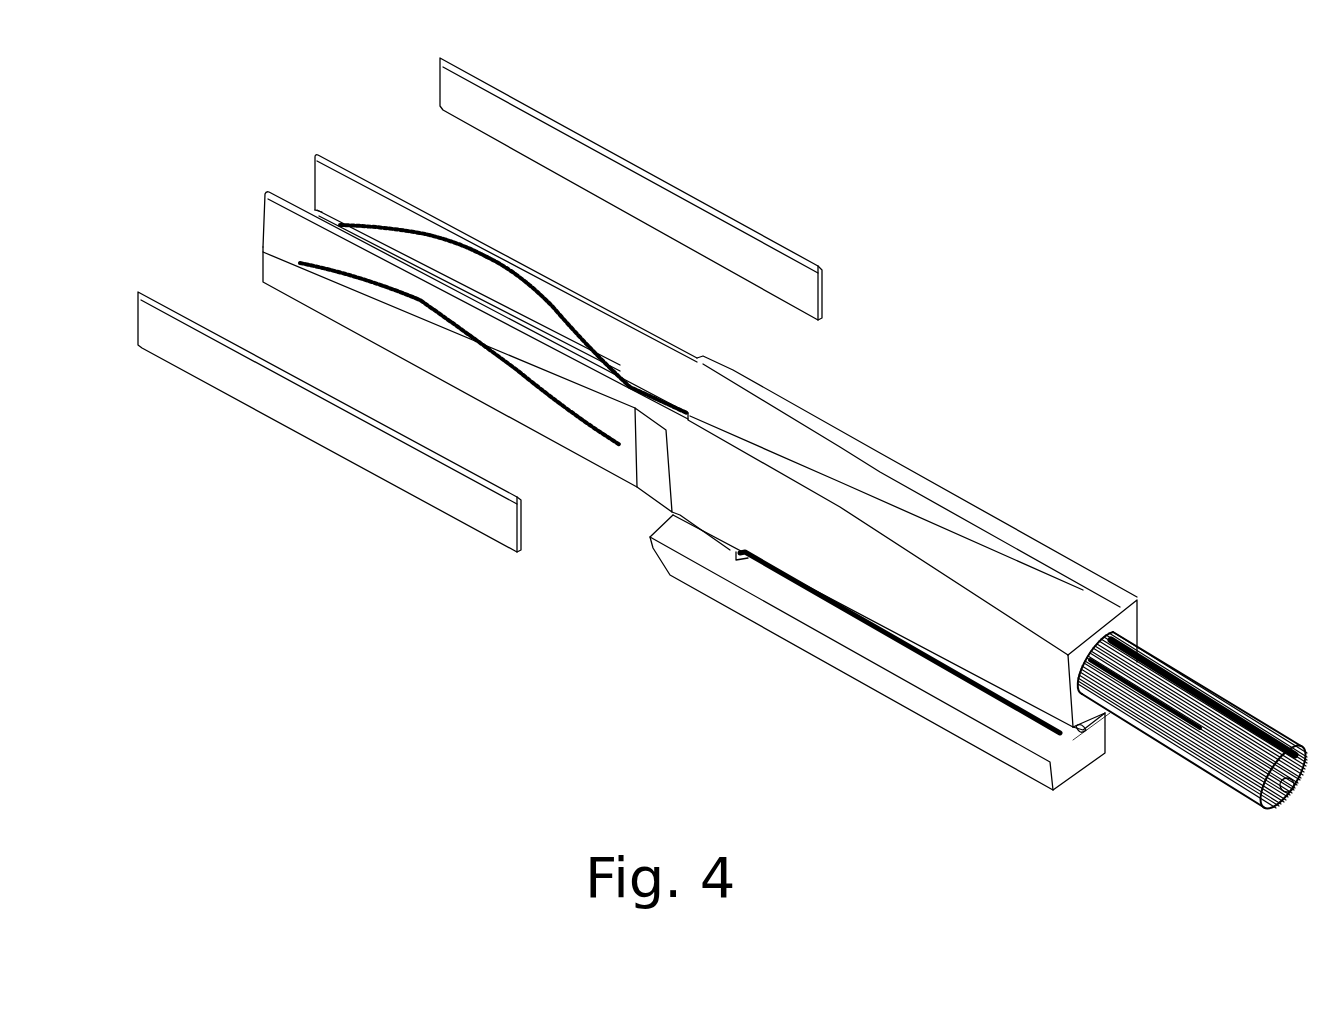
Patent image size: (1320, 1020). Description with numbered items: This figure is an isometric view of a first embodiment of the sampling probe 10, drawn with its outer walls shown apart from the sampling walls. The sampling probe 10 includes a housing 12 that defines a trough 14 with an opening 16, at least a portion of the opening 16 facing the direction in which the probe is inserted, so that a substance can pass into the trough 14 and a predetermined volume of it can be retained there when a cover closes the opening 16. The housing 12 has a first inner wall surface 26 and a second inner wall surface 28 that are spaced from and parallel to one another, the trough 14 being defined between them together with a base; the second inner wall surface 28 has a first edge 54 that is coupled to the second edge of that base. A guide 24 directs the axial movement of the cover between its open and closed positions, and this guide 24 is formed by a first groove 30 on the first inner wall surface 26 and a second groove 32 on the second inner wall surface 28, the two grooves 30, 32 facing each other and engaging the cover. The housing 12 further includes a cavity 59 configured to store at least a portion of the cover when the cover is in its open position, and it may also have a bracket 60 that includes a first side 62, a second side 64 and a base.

The sampling probe 10 is at (541, 590).
The housing 12 is at (374, 160).
The trough 14 is at (337, 217).
The opening 16 is at (290, 175).
The guide 24 is at (490, 250).
The first inner wall surface 26 is at (323, 155).
The second inner wall surface 28 is at (263, 195).
The first groove 30 is at (553, 308).
The second groove 32 is at (367, 267).
The first edge of second inner wall surface 54 is at (290, 212).
The cavity 59 is at (1098, 752).
The bracket 60 is at (1180, 660).
The first side 62 is at (733, 213).
The second side 64 is at (420, 500).